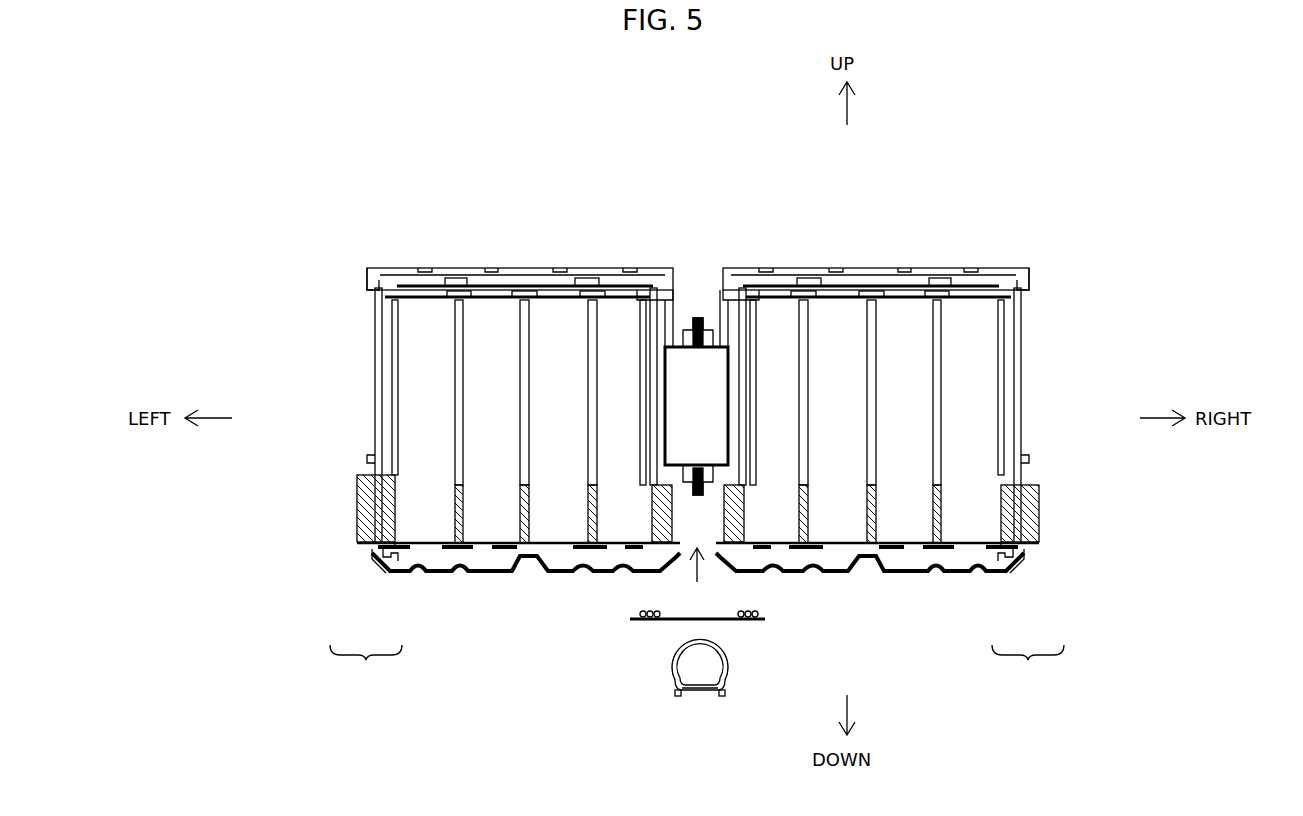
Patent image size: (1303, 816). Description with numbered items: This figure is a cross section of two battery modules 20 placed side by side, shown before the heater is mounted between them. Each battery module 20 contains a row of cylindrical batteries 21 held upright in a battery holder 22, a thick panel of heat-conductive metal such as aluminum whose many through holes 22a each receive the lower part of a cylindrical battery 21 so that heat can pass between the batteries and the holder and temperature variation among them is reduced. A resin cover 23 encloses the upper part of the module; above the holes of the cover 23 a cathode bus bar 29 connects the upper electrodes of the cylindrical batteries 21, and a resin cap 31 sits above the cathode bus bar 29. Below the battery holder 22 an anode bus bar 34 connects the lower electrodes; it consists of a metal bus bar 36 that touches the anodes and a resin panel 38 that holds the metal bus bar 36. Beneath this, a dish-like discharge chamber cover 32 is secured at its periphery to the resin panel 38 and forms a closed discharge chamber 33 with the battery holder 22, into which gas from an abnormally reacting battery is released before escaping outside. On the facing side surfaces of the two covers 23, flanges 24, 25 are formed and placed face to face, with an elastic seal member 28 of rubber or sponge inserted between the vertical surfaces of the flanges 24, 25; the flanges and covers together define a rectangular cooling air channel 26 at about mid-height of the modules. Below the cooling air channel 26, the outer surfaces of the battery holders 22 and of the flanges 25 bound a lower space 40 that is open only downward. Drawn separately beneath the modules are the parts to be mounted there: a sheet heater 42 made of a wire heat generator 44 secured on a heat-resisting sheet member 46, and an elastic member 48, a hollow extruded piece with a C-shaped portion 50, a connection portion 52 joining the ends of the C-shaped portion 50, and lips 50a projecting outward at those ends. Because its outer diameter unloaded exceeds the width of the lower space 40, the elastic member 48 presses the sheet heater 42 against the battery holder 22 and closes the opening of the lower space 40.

The battery module 20 is at (358, 223).
The cylindrical battery 21 is at (416, 411).
The battery holder 22 is at (366, 520).
The through hole 22a is at (418, 550).
The resin cover 23 is at (360, 370).
The flange 24 is at (684, 345).
The flange 25 is at (682, 462).
The cooling air channel 26 is at (703, 418).
The elastic seal member 28 is at (698, 318).
The cathode bus bar 29 is at (514, 268).
The resin cap 31 is at (420, 268).
The discharge chamber cover 32 is at (556, 575).
The discharge chamber 33 is at (466, 556).
The anode bus bar 34 is at (697, 662).
The metal bus bar 36 is at (393, 560).
The resin panel 38 is at (372, 560).
The lower space 40 is at (707, 528).
The heater 42 is at (643, 638).
The wire heat generator 44 is at (650, 611).
The sheet member 46 is at (668, 622).
The elastic member 48 is at (656, 700).
The C-shaped portion 50 is at (726, 658).
The lip 50a is at (678, 697).
The connection portion 52 is at (699, 693).